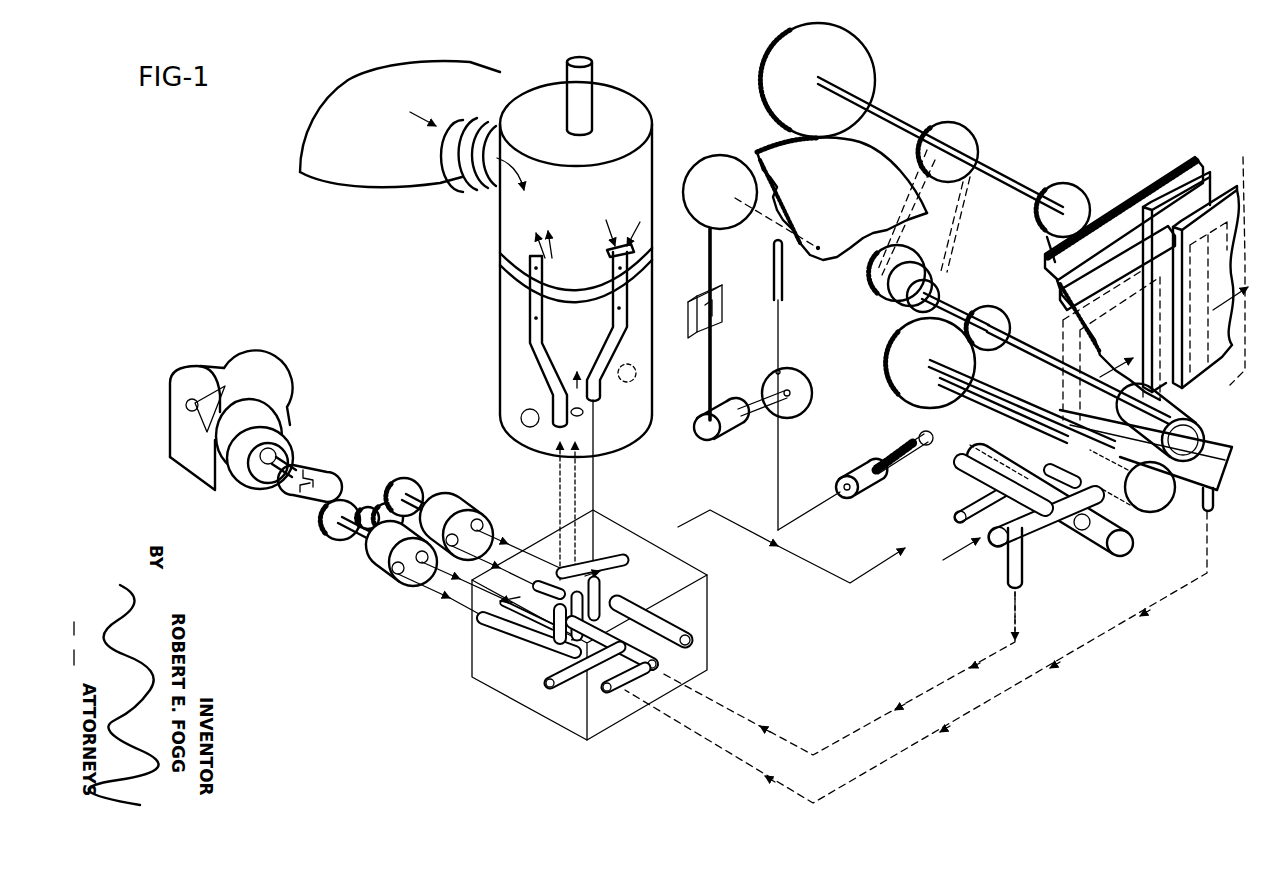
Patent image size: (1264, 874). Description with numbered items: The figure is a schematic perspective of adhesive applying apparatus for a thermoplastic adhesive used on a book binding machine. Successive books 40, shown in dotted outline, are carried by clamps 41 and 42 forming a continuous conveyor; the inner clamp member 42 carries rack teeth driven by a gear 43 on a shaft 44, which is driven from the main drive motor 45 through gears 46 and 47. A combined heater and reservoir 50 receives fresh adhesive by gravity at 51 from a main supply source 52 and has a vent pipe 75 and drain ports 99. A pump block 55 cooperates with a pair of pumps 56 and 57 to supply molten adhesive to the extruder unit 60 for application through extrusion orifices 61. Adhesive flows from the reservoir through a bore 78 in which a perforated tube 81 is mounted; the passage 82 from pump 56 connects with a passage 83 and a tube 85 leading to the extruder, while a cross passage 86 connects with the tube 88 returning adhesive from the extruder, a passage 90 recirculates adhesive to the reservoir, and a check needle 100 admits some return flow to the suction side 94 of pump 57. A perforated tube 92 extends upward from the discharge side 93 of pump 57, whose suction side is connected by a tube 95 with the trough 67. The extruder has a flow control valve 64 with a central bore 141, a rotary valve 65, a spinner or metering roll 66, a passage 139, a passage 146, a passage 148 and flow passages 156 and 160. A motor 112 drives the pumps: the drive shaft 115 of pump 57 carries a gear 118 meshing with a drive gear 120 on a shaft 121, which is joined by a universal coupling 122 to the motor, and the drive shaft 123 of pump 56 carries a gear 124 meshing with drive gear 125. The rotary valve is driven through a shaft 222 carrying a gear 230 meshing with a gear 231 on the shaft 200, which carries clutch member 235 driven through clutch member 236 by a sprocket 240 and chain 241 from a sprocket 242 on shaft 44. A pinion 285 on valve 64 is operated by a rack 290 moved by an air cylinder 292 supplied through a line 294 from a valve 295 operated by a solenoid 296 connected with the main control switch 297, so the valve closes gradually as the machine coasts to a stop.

The books 40 is at (1155, 276).
The clamp 41 is at (1050, 280).
The inner clamp member 42 is at (1180, 190).
The gear 43 is at (1070, 198).
The shaft 44 is at (1006, 177).
The main drive motor 45 is at (712, 158).
The gear 46 is at (777, 143).
The gear 47 is at (762, 52).
The combined heater and reservoir 50 is at (502, 287).
The gravity flow inlet 51 is at (468, 178).
The main supply source 52 is at (338, 176).
The pump block 55 is at (475, 657).
The pump 56 is at (470, 508).
The pump 57 is at (382, 564).
The extruder unit 60 is at (1004, 538).
The extrusion orifices 61 is at (1070, 400).
The flow control valve 64 is at (1100, 552).
The rotary valve 65 is at (1155, 499).
The spinner or metering roll 66 is at (1204, 440).
The trough 67 is at (1214, 484).
The vent pipe 75 is at (567, 84).
The bore 78 is at (603, 597).
The tube 81 is at (616, 322).
The passage 82 is at (556, 570).
The passage 83 is at (617, 556).
The tube 85 is at (824, 572).
The cross passage 86 is at (617, 595).
The tube 88 is at (760, 727).
The passage 90 is at (550, 655).
The perforated tube 92 is at (530, 320).
The discharge side 93 is at (507, 605).
The suction side 94 is at (517, 640).
The tube 95 is at (707, 743).
The drain ports 99 is at (522, 412).
The check needle 100 is at (565, 683).
The motor 112 is at (170, 412).
The drive shaft 115 is at (365, 537).
The gear 118 is at (321, 520).
The drive gear 120 is at (362, 506).
The shaft 121 is at (322, 490).
The universal coupling 122 is at (290, 500).
The drive shaft 123 is at (422, 494).
The gear 124 is at (398, 478).
The drive gear 125 is at (385, 503).
The passage 139 is at (955, 513).
The central bore 141 is at (990, 456).
The passage 146 is at (1037, 520).
The passage 148 is at (1007, 572).
The flow passage 156 is at (1053, 472).
The flow passage 160 is at (1072, 511).
The shaft 200 is at (1027, 348).
The shaft 222 is at (985, 393).
The gear 230 is at (892, 378).
The gear 231 is at (987, 309).
The one-way clutch member 235 is at (905, 323).
The complementary clutch member 236 is at (890, 312).
The sprocket 240 is at (876, 290).
The chain 241 is at (964, 209).
The sprocket 242 is at (962, 130).
The pinion 285 is at (903, 428).
The rack 290 is at (903, 468).
The air cylinder 292 is at (846, 483).
The line 294 is at (777, 283).
The valve 295 is at (795, 406).
The solenoid 296 is at (714, 432).
The main control switch 297 is at (693, 297).